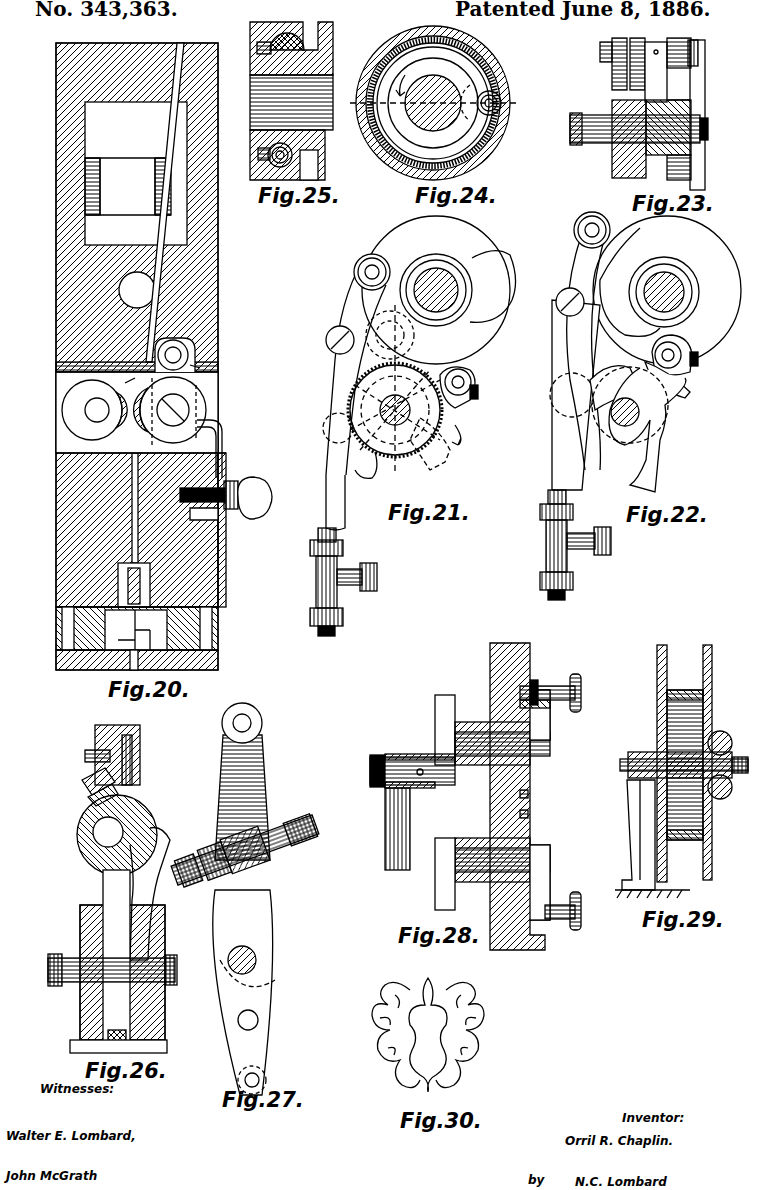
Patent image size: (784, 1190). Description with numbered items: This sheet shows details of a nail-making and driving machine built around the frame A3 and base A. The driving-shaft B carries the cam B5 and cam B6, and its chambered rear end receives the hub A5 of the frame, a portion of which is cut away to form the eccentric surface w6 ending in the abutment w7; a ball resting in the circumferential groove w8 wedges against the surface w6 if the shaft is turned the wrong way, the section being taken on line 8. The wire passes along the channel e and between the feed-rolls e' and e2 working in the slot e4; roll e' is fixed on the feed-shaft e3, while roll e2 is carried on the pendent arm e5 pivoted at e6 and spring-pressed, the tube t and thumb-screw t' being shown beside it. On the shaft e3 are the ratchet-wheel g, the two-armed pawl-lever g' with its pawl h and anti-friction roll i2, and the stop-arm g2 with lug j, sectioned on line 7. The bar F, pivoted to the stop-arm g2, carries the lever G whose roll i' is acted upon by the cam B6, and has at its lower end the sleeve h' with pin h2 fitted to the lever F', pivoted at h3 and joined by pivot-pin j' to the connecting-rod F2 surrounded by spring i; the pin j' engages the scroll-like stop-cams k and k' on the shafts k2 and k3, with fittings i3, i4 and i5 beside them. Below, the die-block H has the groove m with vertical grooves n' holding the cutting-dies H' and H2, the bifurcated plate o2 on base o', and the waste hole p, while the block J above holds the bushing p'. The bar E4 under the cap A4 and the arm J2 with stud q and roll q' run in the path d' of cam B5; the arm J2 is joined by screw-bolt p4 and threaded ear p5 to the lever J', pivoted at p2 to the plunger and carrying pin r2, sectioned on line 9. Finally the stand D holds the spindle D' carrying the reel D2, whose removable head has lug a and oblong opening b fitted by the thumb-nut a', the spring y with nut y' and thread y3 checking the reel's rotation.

In FIG. 20, the frame A3 is at (90, 142).
In FIG. 25, the frame A3 is at (333, 50).
In FIG. 26, the frame A3 is at (108, 718).
In FIG. 28, the frame A3 is at (495, 798).
In FIG. 29, the frame A3 is at (665, 888).
In FIG. 20, the base A is at (56, 525).
In FIG. 20, the channel e is at (156, 303).
In FIG. 20, the feed-roll e' is at (94, 410).
In FIG. 20, the feed-roll e2 is at (170, 411).
In FIG. 20, the feed-shaft e3 is at (97, 410).
In FIG. 23, the feed-shaft e3 is at (594, 115).
In FIG. 21, the feed-shaft e3 is at (408, 406).
In FIG. 22, the feed-shaft e3 is at (640, 414).
In FIG. 20, the slot e4 is at (136, 377).
In FIG. 20, the pendent arm e5 is at (201, 368).
In FIG. 20, the pivot e6 is at (175, 355).
In FIG. 20, the tube t is at (217, 449).
In FIG. 20, the thumb screw t' is at (226, 498).
In FIG. 20, the block J is at (94, 585).
In FIG. 20, the steel bushing p' is at (140, 582).
In FIG. 20, the vertical grooves n' is at (136, 628).
In FIG. 20, the rectangular groove m is at (62, 639).
In FIG. 20, the cutting-die H' is at (136, 630).
In FIG. 20, the cutting-die H2 is at (158, 643).
In FIG. 20, the bifurcated plate o2 is at (153, 622).
In FIG. 20, the base o' is at (130, 643).
In FIG. 20, the die-holding block H is at (145, 660).
In FIG. 20, the hole p is at (137, 666).
In FIG. 25, the cam B5 is at (277, 36).
In FIG. 24, the cam B5 is at (497, 78).
In FIG. 21, the cam B5 is at (436, 290).
In FIG. 22, the cam B5 is at (667, 290).
In FIG. 26, the cam B5 is at (145, 812).
In FIG. 25, the driving-shaft B is at (284, 84).
In FIG. 24, the driving-shaft B is at (428, 85).
In FIG. 21, the driving-shaft B is at (440, 275).
In FIG. 22, the driving-shaft B is at (678, 278).
In FIG. 26, the driving-shaft B is at (90, 848).
In FIG. 25, the circumferential groove w8 is at (298, 30).
In FIG. 24, the circumferential groove w8 is at (470, 58).
In FIG. 24, the abutment w7 is at (480, 90).
In FIG. 24, the eccentric surface w6 is at (478, 116).
In FIG. 24, the hub A5 is at (420, 146).
In FIG. 24, the section line 8 is at (435, 104).
In FIG. 23, the rod or bar F is at (707, 115).
In FIG. 21, the rod or bar F is at (335, 502).
In FIG. 22, the rod or bar F is at (576, 395).
In FIG. 23, the pawl h is at (622, 64).
In FIG. 21, the pawl h is at (459, 390).
In FIG. 22, the pawl h is at (675, 361).
In FIG. 23, the two-armed pawl-lever g' is at (656, 72).
In FIG. 21, the two-armed pawl-lever g' is at (408, 448).
In FIG. 22, the two-armed pawl-lever g' is at (641, 427).
In FIG. 23, the anti-friction roll i2 is at (676, 40).
In FIG. 28, the anti-friction roll i2 is at (552, 688).
In FIG. 23, the lug j is at (678, 94).
In FIG. 22, the lug j is at (621, 372).
In FIG. 23, the ratchet-wheel g is at (643, 139).
In FIG. 23, the stop-arm g2 is at (679, 174).
In FIG. 21, the stop-arm g2 is at (330, 470).
In FIG. 22, the stop-arm g2 is at (595, 391).
In FIG. 21, the cam B6 is at (493, 287).
In FIG. 22, the cam B6 is at (630, 282).
In FIG. 21, the lever G is at (356, 368).
In FIG. 22, the lever G is at (580, 355).
In FIG. 21, the anti-friction roll i' is at (375, 268).
In FIG. 22, the anti-friction roll i' is at (590, 227).
In FIG. 28, the anti-friction roll i' is at (552, 882).
In FIG. 21, the section line 7 is at (394, 393).
In FIG. 21, the section line 9 is at (395, 384).
In FIG. 21, the sleeve h' is at (321, 582).
In FIG. 22, the sleeve h' is at (549, 545).
In FIG. 21, the stud or pin h2 is at (352, 569).
In FIG. 22, the stud or pin h2 is at (582, 533).
In FIG. 26, the cap A4 is at (82, 780).
In FIG. 26, the bar E4 is at (88, 800).
In FIG. 26, the cam path d' is at (75, 824).
In FIG. 26, the arm J2 is at (162, 860).
In FIG. 27, the arm J2 is at (222, 762).
In FIG. 26, the pivot p2 is at (136, 1008).
In FIG. 27, the pivot p2 is at (252, 1026).
In FIG. 26, the threaded ear p5 is at (118, 915).
In FIG. 27, the threaded ear p5 is at (233, 854).
In FIG. 26, the lever J' is at (116, 957).
In FIG. 27, the lever J' is at (244, 992).
In FIG. 26, the lever F' is at (111, 977).
In FIG. 28, the lever F' is at (412, 761).
In FIG. 26, the pin h3 is at (176, 985).
In FIG. 27, the pin h3 is at (250, 966).
In FIG. 26, the pin r2 is at (108, 1035).
In FIG. 27, the pin r2 is at (266, 1079).
In FIG. 27, the stud q is at (242, 723).
In FIG. 27, the anti-friction roll q' is at (272, 722).
In FIG. 27, the screw-bolt p4 is at (245, 850).
In FIG. 28, the scroll-like stop-cam k is at (452, 729).
In FIG. 28, the short horizontal shaft k2 is at (478, 745).
In FIG. 28, the spiral spring i is at (540, 715).
In FIG. 28, the knob i3 is at (582, 802).
In FIG. 28, the washer i4 is at (552, 708).
In FIG. 28, the pivot-pin j' is at (432, 785).
In FIG. 28, the connecting-rod F2 is at (389, 829).
In FIG. 28, the nut i5 is at (528, 794).
In FIG. 28, the short horizontal shaft k3 is at (470, 850).
In FIG. 28, the scroll-like stop-cam k' is at (437, 874).
In FIG. 29, the wire-carrying reel or drum D2 is at (684, 763).
In FIG. 30, the wire-carrying reel or drum D2 is at (462, 998).
In FIG. 29, the lug a is at (685, 767).
In FIG. 29, the oblong opening b is at (700, 792).
In FIG. 30, the oblong opening b is at (428, 1012).
In FIG. 29, the spindle D' is at (676, 765).
In FIG. 29, the thread y3 is at (749, 757).
In FIG. 29, the button or thumb-nut a' is at (721, 736).
In FIG. 29, the spiral spring y is at (737, 749).
In FIG. 29, the nut y' is at (728, 787).
In FIG. 29, the stand D is at (633, 835).